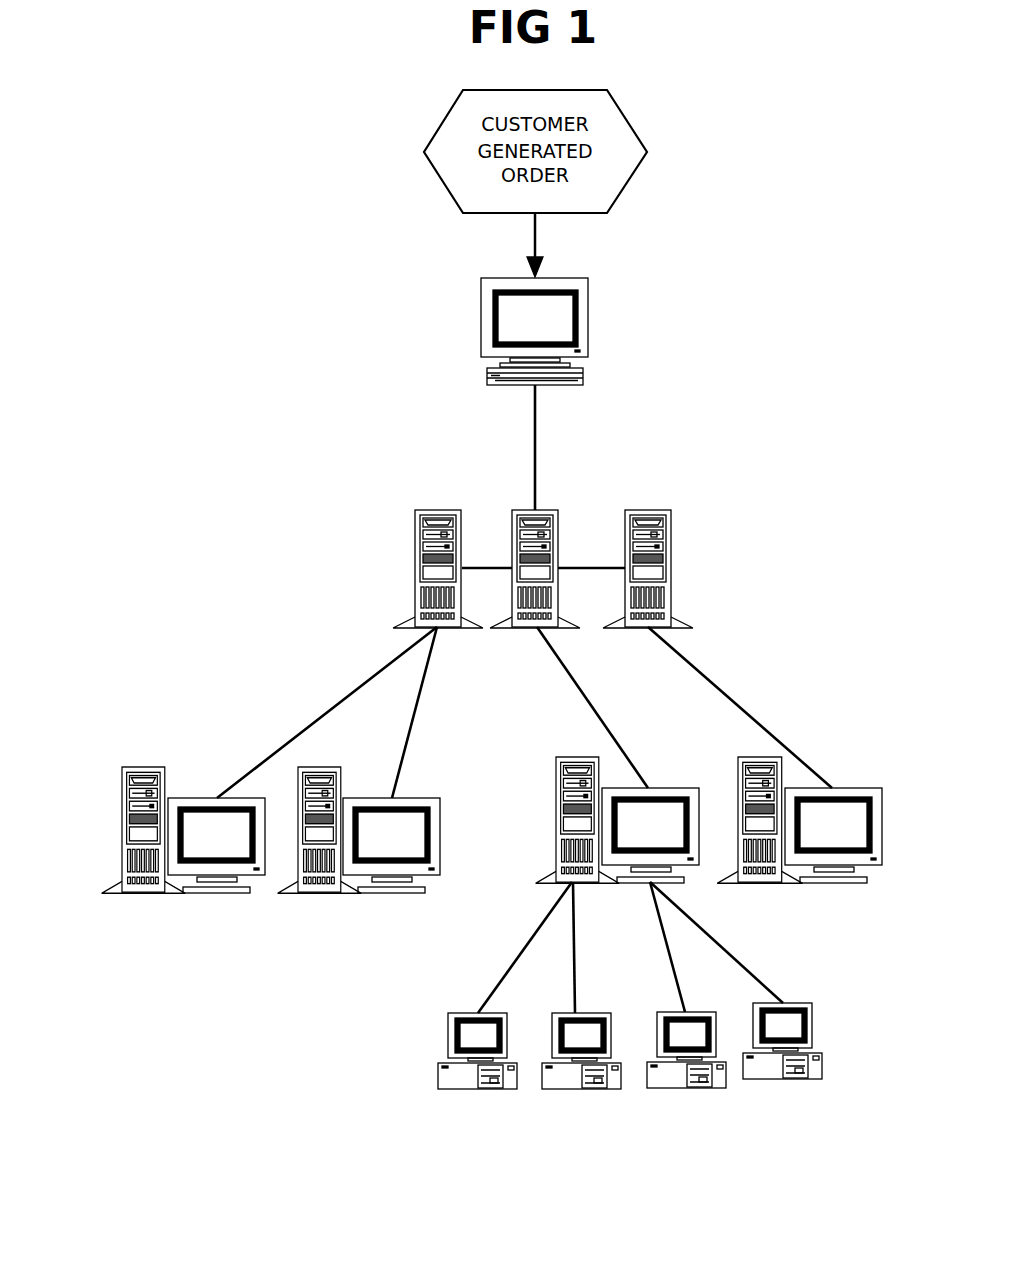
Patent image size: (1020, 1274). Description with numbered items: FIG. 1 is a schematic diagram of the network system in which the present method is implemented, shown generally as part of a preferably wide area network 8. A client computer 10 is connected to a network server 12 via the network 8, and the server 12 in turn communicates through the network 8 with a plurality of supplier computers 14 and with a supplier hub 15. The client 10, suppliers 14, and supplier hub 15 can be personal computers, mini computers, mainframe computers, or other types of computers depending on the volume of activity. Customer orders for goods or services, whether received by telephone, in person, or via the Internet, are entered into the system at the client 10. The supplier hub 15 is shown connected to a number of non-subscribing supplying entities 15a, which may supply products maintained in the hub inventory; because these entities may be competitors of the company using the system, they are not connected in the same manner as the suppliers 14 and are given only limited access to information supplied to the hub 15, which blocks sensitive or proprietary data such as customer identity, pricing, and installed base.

The wide area network 8 is at (537, 457).
The client computer 10 is at (588, 328).
The network server 12 is at (560, 537).
The supplier computers 14 is at (120, 830).
The supplier hub 15 is at (555, 820).
The non-subscribing supplying entities 15a is at (438, 1070).